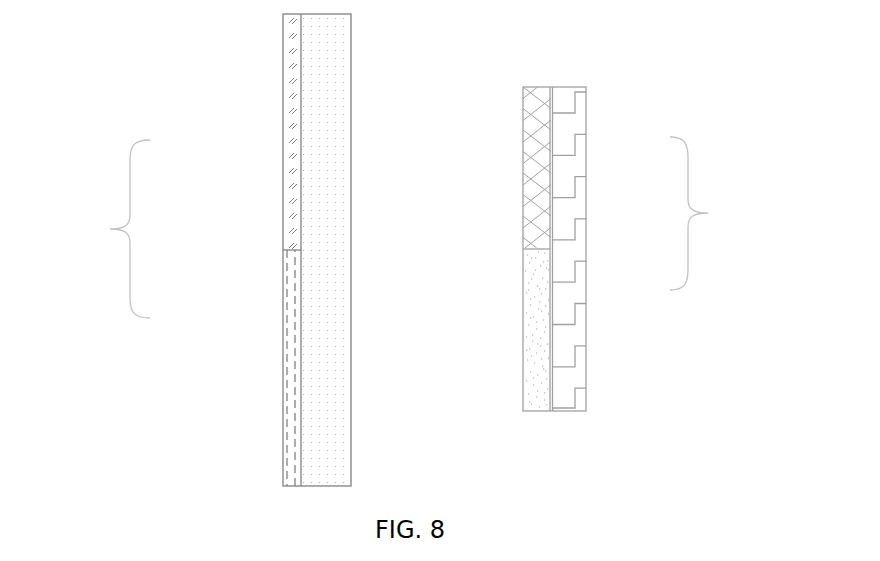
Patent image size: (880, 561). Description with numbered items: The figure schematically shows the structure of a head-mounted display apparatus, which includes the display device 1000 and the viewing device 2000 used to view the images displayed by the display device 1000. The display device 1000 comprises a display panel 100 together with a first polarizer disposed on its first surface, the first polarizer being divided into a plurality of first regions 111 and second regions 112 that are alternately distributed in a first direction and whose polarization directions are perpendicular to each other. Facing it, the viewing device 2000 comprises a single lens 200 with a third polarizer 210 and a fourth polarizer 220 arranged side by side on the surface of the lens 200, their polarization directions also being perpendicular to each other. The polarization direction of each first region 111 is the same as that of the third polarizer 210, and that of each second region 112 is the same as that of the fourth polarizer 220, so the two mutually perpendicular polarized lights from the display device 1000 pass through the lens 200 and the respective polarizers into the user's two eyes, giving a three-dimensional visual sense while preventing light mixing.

The viewing device 2000 is at (100, 229).
The lens 200 is at (253, 250).
The fourth polarizer 220 is at (288, 199).
The third polarizer 210 is at (288, 288).
The display device 1000 is at (721, 213).
The display panel 100 is at (594, 249).
The first region 111 is at (535, 177).
The second region 112 is at (535, 357).